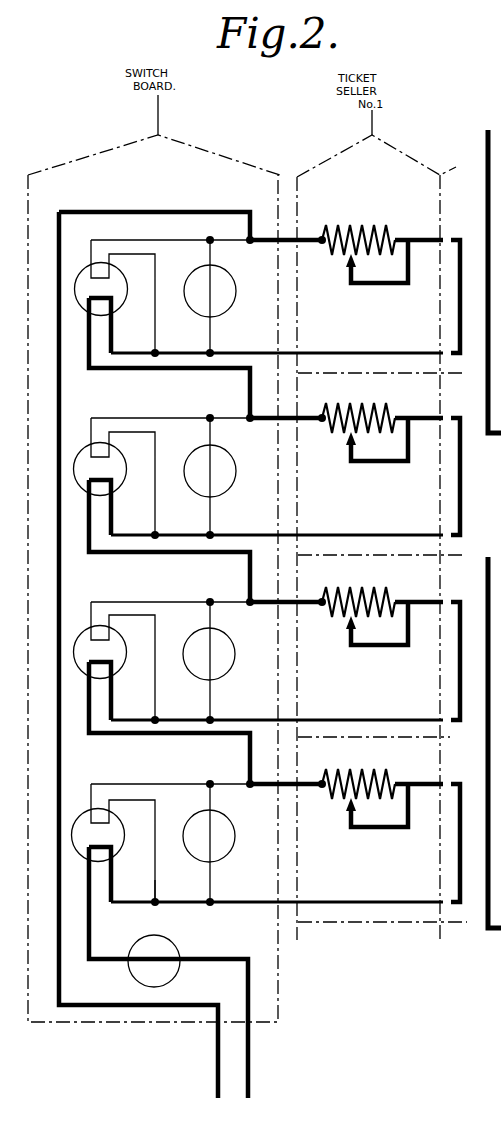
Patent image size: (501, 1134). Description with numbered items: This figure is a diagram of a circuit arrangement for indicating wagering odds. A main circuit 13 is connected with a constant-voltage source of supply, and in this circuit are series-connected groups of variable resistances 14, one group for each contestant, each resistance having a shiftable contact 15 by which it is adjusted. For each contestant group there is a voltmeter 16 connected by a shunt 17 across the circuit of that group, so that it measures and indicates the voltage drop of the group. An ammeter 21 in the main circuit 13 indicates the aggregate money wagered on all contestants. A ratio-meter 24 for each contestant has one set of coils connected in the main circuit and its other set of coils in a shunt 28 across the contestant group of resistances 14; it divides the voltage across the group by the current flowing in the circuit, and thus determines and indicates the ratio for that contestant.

The main circuit 13 is at (247, 1053).
The variable resistances 14 is at (358, 224).
The shiftable contacts 15 is at (349, 284).
The voltmeter 16 is at (228, 292).
The shunt 17 is at (212, 260).
The ammeter 21 is at (158, 948).
The ratio-meter 24 is at (118, 287).
The shunt 28 is at (153, 890).